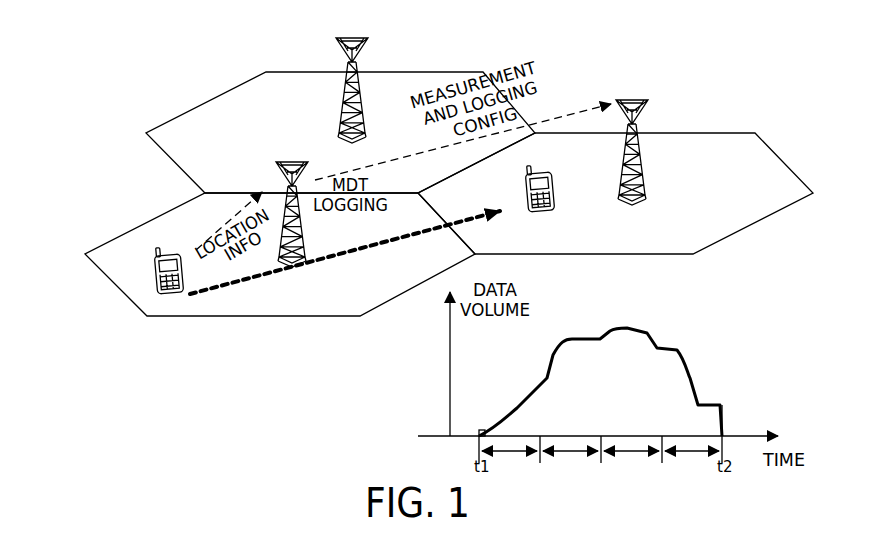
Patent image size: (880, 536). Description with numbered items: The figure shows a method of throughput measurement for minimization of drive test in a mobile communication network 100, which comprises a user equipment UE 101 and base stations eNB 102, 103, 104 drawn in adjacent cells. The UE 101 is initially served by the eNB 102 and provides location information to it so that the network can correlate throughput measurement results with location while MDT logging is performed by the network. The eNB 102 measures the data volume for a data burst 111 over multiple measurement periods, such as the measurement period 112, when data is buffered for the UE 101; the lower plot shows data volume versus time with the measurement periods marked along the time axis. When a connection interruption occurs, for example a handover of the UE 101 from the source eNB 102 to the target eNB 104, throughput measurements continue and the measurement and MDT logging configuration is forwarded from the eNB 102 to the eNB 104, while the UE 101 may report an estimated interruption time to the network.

The mobile communication network 100 is at (121, 41).
The user equipment 101 is at (172, 252).
The base station eNB 102 is at (293, 161).
The base station eNB 103 is at (352, 38).
The base station eNB 104 is at (632, 100).
The data burst 111 is at (637, 325).
The measurement period 112 is at (508, 447).